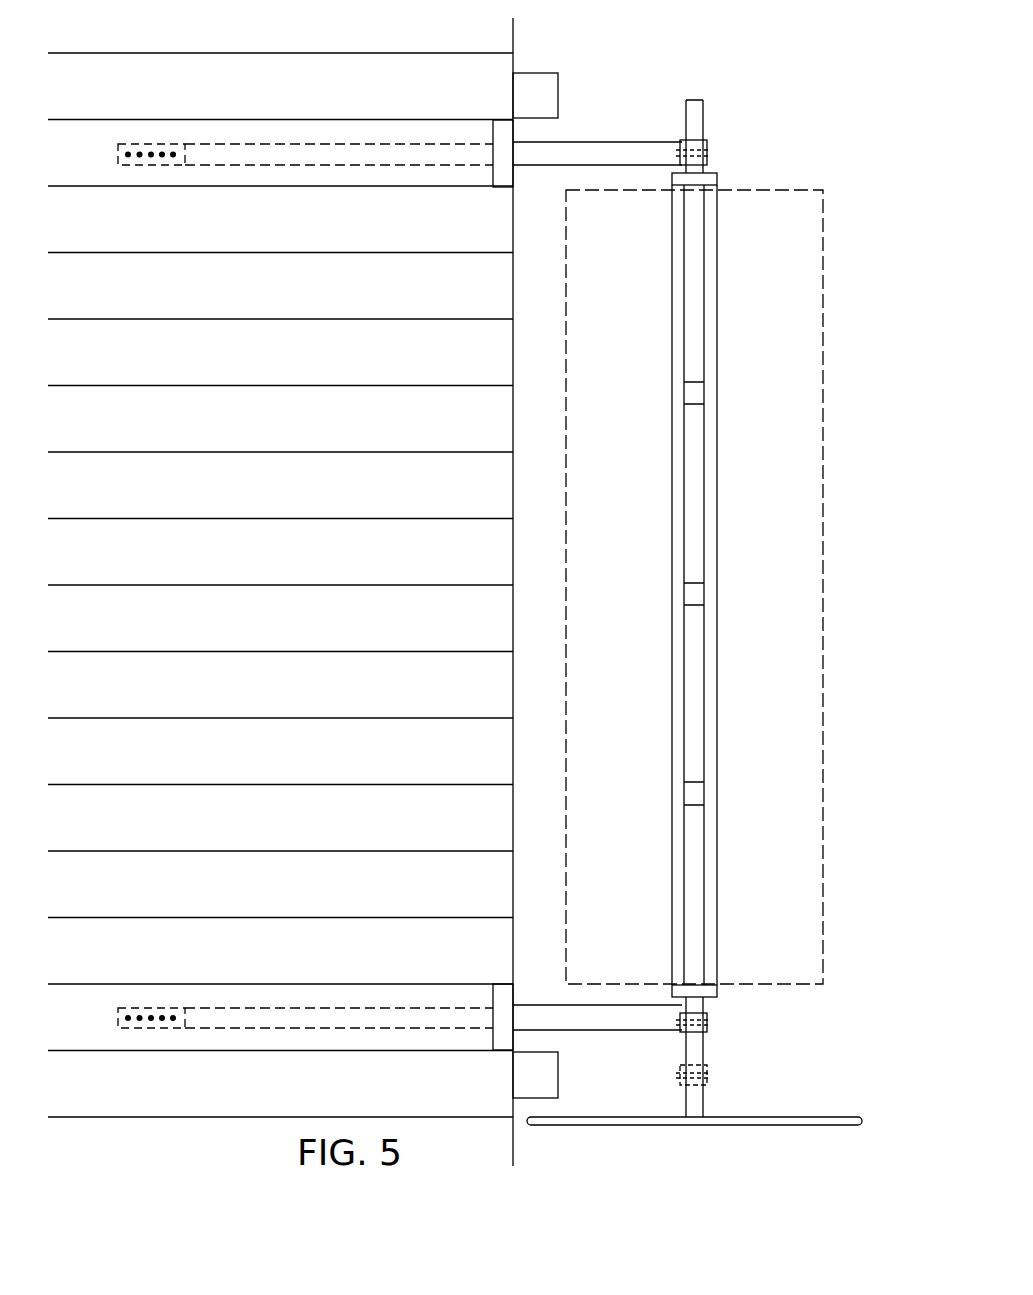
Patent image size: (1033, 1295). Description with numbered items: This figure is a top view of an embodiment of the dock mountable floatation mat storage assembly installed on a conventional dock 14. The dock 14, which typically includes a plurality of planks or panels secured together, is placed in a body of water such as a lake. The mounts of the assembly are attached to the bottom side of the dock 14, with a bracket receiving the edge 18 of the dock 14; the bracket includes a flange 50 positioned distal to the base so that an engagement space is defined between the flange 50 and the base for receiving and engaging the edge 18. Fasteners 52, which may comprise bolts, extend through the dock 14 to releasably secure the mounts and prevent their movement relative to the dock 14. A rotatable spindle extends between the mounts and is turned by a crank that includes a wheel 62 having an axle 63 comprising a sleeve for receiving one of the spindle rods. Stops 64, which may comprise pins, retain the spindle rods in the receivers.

The dock 14 is at (492, 296).
The edge 18 is at (513, 66).
The flange 50 is at (505, 1035).
The fastener 52 is at (162, 1022).
The wheel 62 is at (807, 1121).
The axle 63 is at (697, 1102).
The stop 64 is at (708, 155).